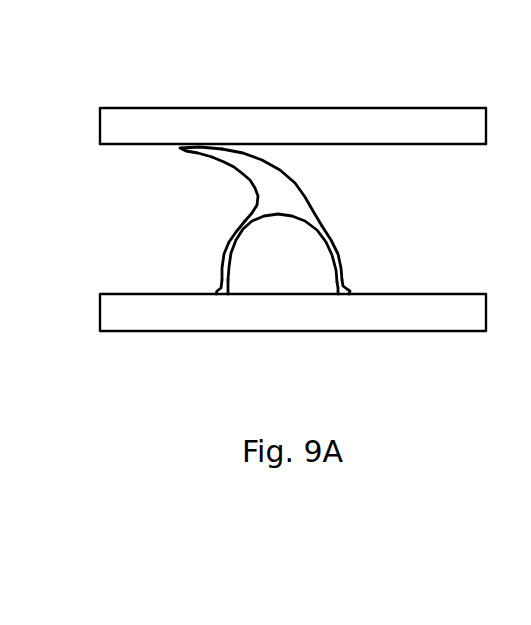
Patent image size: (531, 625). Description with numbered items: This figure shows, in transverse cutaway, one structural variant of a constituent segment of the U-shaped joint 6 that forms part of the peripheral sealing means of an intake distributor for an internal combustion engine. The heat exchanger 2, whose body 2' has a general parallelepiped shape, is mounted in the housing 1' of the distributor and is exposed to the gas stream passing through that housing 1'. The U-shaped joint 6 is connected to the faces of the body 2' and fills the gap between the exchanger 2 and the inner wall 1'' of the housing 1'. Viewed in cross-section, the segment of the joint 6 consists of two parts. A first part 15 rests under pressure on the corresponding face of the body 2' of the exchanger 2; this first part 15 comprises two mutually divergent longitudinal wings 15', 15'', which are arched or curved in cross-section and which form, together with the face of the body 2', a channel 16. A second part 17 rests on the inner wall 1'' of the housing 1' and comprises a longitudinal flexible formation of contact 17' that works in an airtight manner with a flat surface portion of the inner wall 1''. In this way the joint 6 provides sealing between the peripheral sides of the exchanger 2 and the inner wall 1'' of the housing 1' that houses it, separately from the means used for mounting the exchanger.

The housing 1' is at (301, 139).
The inner wall 1'' is at (296, 179).
The heat exchanger 2 is at (315, 288).
The body of the exchanger 2' is at (293, 312).
The U-shaped joint 6 is at (277, 237).
The first part 15 is at (332, 313).
The longitudinal wing 15' is at (227, 331).
The longitudinal wing 15'' is at (339, 336).
The channel 16 is at (277, 279).
The second part 17 is at (327, 187).
The flexible formation of contact 17' is at (284, 113).